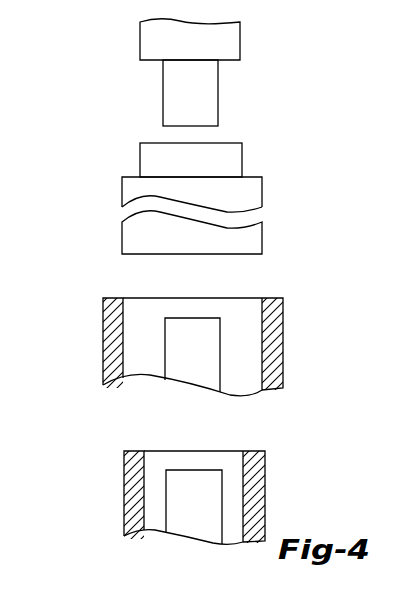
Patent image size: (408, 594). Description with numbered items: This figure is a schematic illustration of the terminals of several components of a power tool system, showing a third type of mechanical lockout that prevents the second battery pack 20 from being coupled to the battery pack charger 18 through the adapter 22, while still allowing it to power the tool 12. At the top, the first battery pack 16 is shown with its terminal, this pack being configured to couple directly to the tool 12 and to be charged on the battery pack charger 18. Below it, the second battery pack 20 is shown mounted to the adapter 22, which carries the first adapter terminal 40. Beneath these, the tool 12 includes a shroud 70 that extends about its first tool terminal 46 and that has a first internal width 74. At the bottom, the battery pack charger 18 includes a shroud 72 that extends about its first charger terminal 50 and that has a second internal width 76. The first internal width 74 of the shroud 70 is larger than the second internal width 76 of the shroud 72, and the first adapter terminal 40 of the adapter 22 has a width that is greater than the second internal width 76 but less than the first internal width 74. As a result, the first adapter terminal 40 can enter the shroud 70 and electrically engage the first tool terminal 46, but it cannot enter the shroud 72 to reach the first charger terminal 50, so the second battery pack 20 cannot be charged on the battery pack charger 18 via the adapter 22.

The power tool 12 is at (201, 345).
The first battery pack 16 is at (138, 38).
The battery pack charger 18 is at (201, 500).
The second battery pack 20 is at (140, 152).
The adapter 22 is at (120, 195).
The first adapter terminal 40 is at (262, 183).
The first tool terminal 46 is at (190, 365).
The first charger terminal 50 is at (178, 522).
The shroud 70 is at (103, 325).
The shroud 72 is at (124, 480).
The first internal width 74 is at (262, 272).
The second internal width 76 is at (243, 423).